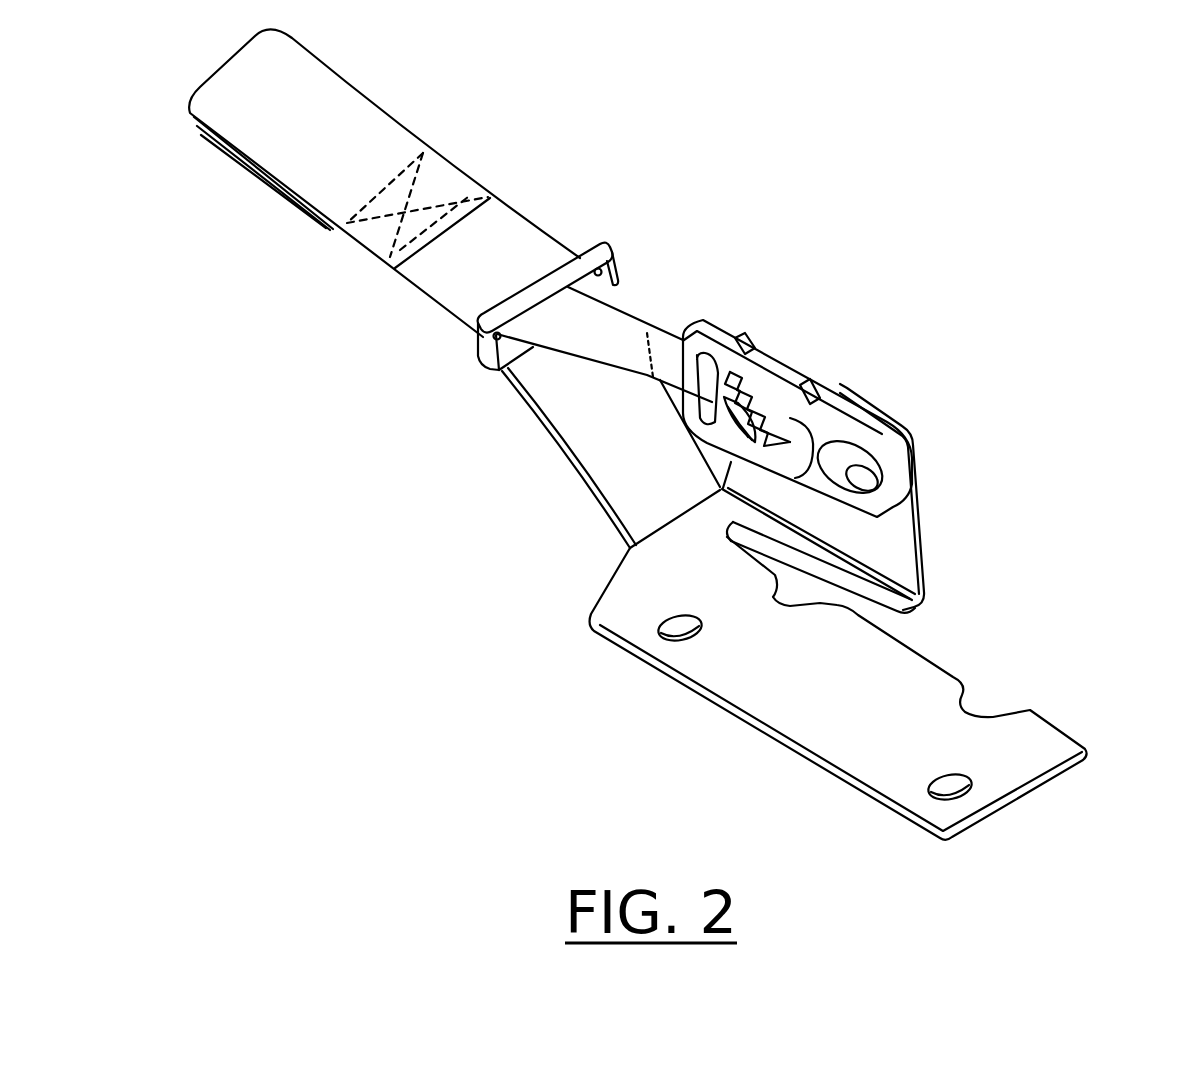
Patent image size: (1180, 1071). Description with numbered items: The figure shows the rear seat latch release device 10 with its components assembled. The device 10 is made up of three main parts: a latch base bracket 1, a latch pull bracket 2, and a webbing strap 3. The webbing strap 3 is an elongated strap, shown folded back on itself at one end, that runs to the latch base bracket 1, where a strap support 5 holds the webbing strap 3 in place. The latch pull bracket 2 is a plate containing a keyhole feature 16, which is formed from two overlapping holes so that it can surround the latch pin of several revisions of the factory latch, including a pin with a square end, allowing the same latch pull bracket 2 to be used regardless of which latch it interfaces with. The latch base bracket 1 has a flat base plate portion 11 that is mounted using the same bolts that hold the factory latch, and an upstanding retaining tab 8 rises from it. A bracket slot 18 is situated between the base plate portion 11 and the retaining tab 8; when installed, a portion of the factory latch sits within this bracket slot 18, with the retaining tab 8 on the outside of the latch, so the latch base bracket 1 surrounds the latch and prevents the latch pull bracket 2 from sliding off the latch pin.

The latch base bracket 1 is at (710, 665).
The latch pull bracket 2 is at (762, 355).
The webbing strap 3 is at (497, 221).
The strap support 5 is at (612, 267).
The retaining tab 8 is at (883, 547).
The rear seat latch release device 10 is at (527, 525).
The base plate portion 11 is at (873, 710).
The keyhole feature 16 is at (837, 463).
The bracket slot 18 is at (877, 617).